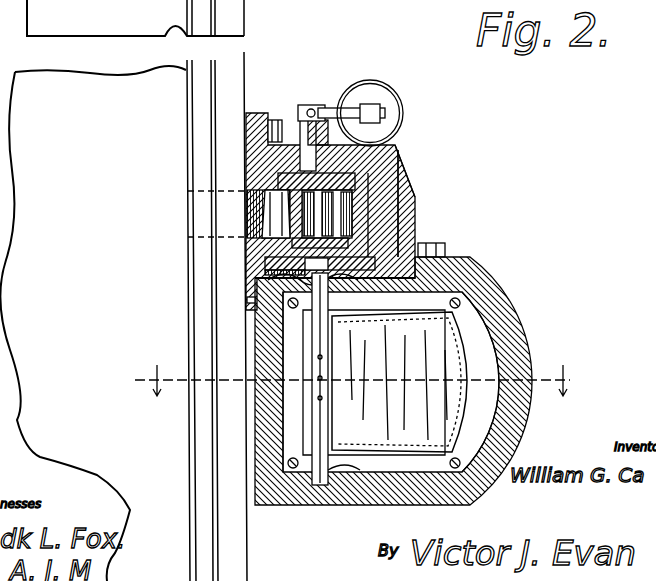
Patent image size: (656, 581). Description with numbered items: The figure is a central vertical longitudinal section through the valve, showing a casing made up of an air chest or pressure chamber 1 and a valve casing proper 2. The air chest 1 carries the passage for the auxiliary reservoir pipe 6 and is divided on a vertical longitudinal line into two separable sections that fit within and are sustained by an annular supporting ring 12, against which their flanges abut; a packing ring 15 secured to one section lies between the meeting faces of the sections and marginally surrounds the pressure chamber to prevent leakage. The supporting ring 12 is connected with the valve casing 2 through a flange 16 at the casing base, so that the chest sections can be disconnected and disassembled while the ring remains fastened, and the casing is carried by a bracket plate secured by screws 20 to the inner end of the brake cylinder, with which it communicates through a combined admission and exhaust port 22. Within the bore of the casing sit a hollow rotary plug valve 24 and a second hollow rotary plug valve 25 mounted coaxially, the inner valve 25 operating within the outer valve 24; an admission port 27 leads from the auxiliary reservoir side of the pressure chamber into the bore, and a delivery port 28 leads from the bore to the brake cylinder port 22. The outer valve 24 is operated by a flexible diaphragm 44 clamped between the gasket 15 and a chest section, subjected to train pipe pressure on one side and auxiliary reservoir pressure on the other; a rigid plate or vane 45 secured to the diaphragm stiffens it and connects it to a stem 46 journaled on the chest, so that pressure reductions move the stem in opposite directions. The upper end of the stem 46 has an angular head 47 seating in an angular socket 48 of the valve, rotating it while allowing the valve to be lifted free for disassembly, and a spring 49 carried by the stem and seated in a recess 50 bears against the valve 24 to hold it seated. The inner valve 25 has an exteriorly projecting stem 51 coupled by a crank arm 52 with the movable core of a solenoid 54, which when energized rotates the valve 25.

The air chest 1 is at (262, 431).
The valve casing 2 is at (410, 182).
The auxiliary reservoir pipe 6 is at (355, 380).
The supporting ring 12 is at (492, 298).
The packing ring 15 is at (478, 344).
The flange 16 is at (425, 275).
The screws 20 is at (277, 120).
The combined admission and exhaust port 22 is at (205, 212).
The hollow rotary plug valve 24 is at (385, 165).
The hollow rotary plug valve 25 is at (247, 178).
The admission port 27 is at (400, 220).
The delivery port 28 is at (258, 212).
The flexible diaphragm 44 is at (350, 455).
The plate or vane 45 is at (378, 467).
The stem 46 is at (315, 335).
The angular head 47 is at (276, 270).
The angular socket 48 is at (437, 243).
The spring 49 is at (283, 291).
The recess 50 is at (345, 315).
The stem 51 is at (302, 132).
The crank arm 52 is at (333, 105).
The solenoid 54 is at (398, 93).